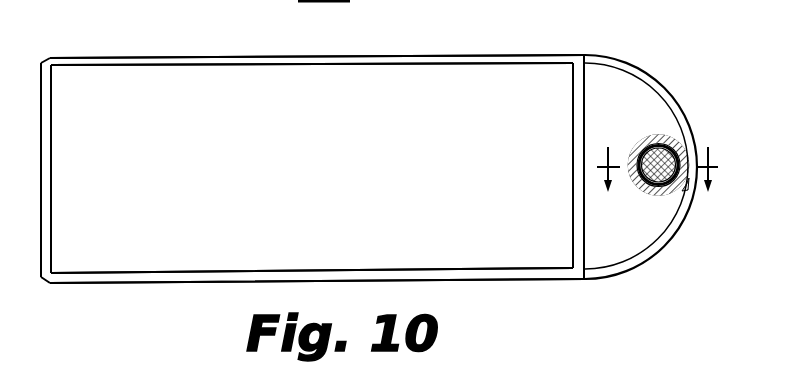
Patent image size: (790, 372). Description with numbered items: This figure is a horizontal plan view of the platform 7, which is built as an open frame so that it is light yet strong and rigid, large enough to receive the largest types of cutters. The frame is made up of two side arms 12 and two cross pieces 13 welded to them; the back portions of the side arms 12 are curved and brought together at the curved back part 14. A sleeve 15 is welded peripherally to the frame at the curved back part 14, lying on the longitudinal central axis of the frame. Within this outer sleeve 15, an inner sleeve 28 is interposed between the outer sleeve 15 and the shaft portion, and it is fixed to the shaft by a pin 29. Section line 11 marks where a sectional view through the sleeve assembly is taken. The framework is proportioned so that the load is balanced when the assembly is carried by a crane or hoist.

The platform 7 is at (92, 58).
The section line 11 is at (660, 157).
The side arms 12 is at (455, 54).
The cross pieces 13 is at (51, 170).
The curved back part 14 is at (659, 81).
The sleeve 15 is at (648, 197).
The inner sleeve 28 is at (645, 136).
The pin 29 is at (628, 192).